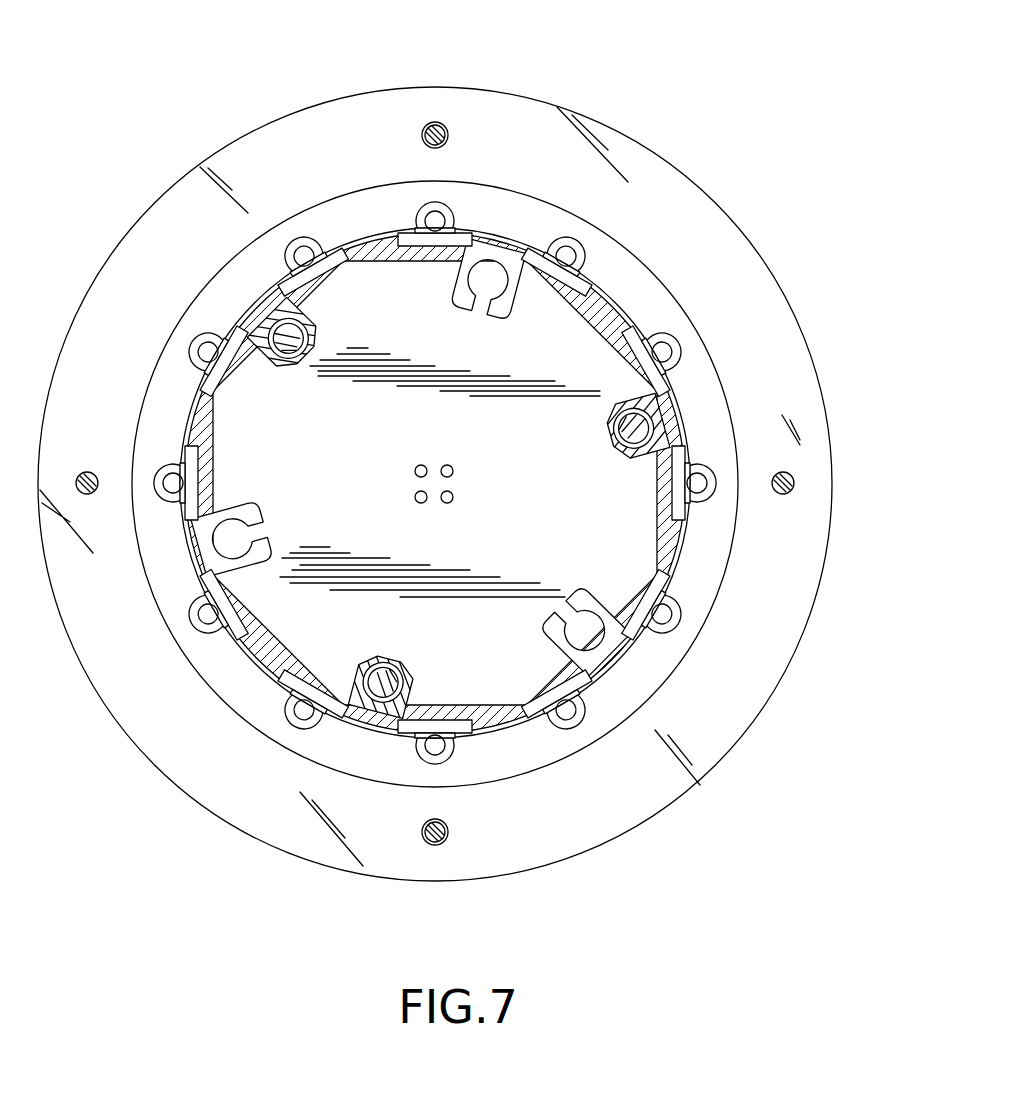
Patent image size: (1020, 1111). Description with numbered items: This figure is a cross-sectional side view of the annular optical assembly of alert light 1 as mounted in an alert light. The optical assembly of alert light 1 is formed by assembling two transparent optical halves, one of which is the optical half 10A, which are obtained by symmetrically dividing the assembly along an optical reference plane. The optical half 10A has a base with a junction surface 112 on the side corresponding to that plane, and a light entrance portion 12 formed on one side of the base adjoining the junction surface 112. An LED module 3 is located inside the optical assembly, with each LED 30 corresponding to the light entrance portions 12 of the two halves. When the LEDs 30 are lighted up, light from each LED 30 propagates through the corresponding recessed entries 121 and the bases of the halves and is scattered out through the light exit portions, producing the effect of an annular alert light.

The optical assembly of alert light 1 is at (435, 461).
The optical half 10A is at (435, 444).
The junction surface 112 is at (252, 165).
The light entrance portion 12 is at (403, 223).
The recessed entry 121 is at (440, 213).
The LED module 3 is at (460, 210).
The LED 30 is at (437, 222).